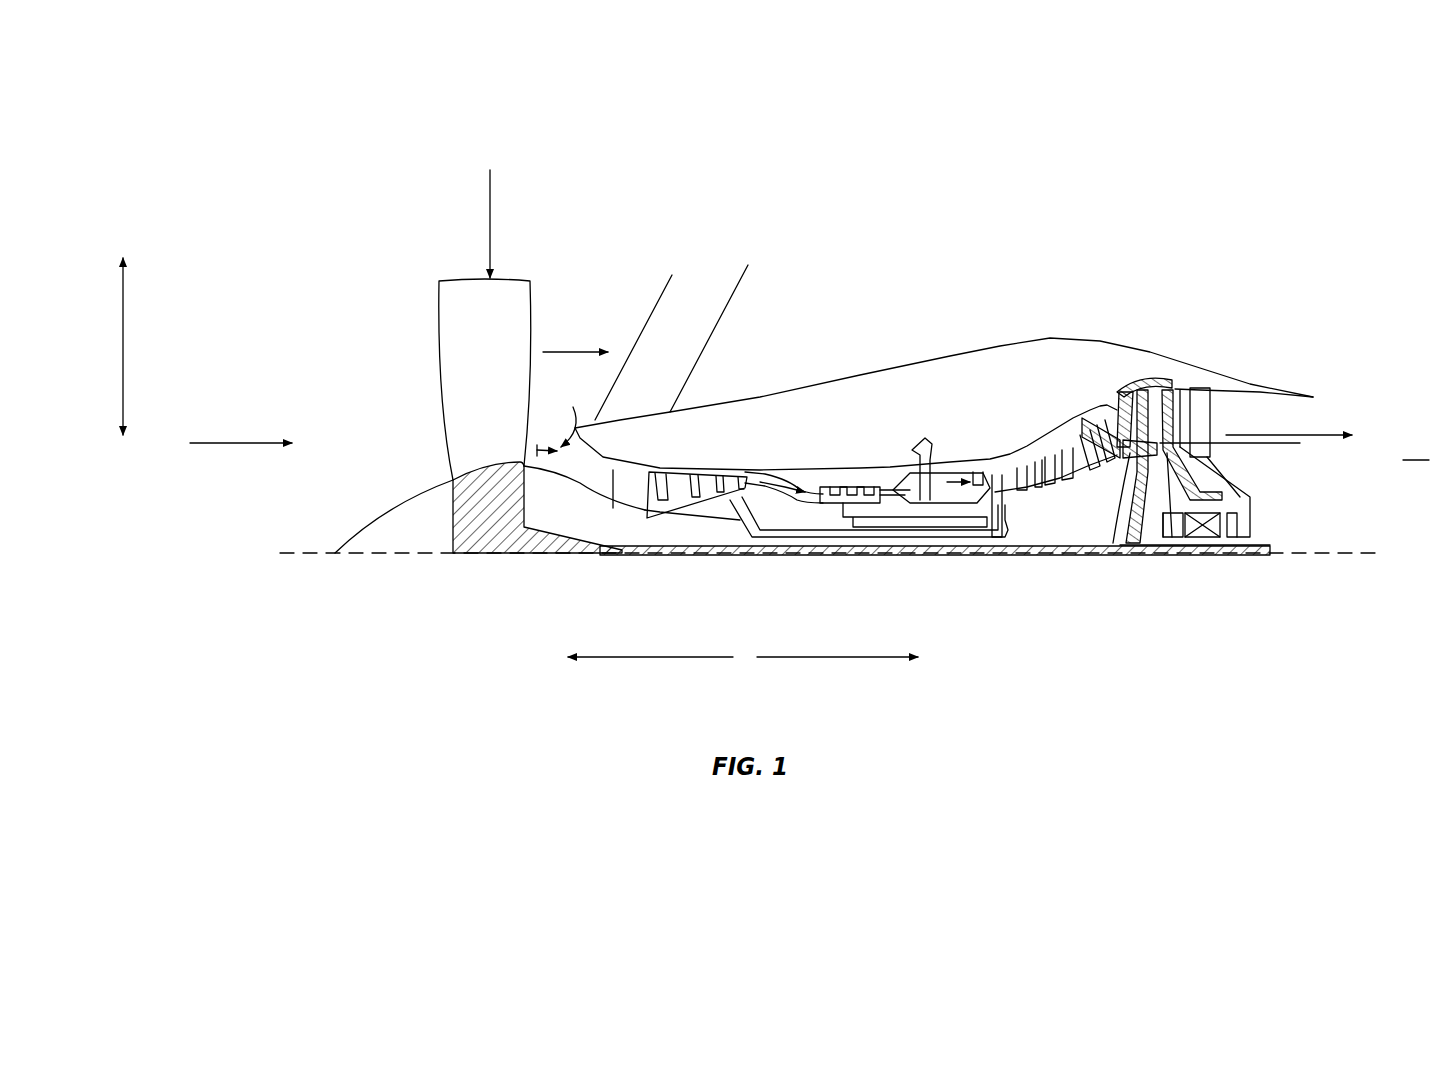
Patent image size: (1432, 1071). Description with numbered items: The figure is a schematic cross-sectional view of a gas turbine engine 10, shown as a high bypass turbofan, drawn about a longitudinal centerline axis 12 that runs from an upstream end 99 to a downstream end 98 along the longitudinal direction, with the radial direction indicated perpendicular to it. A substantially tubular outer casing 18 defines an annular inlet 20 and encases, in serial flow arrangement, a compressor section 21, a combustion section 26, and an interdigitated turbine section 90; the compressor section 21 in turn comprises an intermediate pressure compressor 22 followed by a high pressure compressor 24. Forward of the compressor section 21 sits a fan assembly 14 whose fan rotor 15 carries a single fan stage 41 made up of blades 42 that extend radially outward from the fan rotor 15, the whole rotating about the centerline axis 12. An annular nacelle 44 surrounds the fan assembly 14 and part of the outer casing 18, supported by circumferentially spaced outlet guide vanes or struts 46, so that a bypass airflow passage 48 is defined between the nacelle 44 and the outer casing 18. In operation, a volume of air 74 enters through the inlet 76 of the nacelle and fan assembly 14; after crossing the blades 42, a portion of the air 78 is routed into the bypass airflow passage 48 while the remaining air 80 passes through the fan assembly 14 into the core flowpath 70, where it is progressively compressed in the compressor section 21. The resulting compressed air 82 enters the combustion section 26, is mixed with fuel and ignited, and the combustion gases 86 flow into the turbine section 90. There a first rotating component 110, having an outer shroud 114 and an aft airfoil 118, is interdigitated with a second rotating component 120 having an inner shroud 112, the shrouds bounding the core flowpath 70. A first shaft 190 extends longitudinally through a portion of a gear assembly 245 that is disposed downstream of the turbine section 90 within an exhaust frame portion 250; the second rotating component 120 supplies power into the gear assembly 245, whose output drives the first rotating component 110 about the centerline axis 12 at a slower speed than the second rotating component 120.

The gas turbine engine 10 is at (1103, 188).
The axial centerline axis 12 is at (1313, 552).
The fan assembly 14 is at (421, 412).
The fan rotor 15 is at (455, 510).
The outer casing 18 is at (885, 380).
The annular inlet 20 is at (575, 410).
The compressor section 21 is at (748, 448).
The intermediate pressure compressor 22 is at (658, 478).
The high pressure compressor 24 is at (830, 478).
The combustion section 26 is at (952, 450).
The fan stage 41 is at (490, 211).
The blades 42 is at (450, 330).
The nacelle 44 is at (393, 225).
The outlet guide vanes or struts 46 is at (680, 358).
The bypass airflow passage 48 is at (820, 343).
The core flowpath 70 is at (632, 485).
The air 74 is at (252, 445).
The inlet 76 is at (278, 372).
The bypass air 78 is at (562, 352).
The core air 80 is at (537, 456).
The compressed air 82 is at (775, 483).
The combustion gases 86 is at (1330, 430).
The turbine section 90 is at (1094, 375).
The downstream end 98 is at (1416, 447).
The upstream end 99 is at (136, 535).
The first rotating component 110 is at (1160, 405).
The inner shroud 112 is at (1170, 450).
The outer shroud 114 is at (1158, 376).
The aft airfoil 118 is at (1165, 383).
The second rotating component 120 is at (1172, 545).
The first shaft 190 is at (556, 546).
The gear assembly 245 is at (1207, 537).
The exhaust frame portion 250 is at (1203, 418).